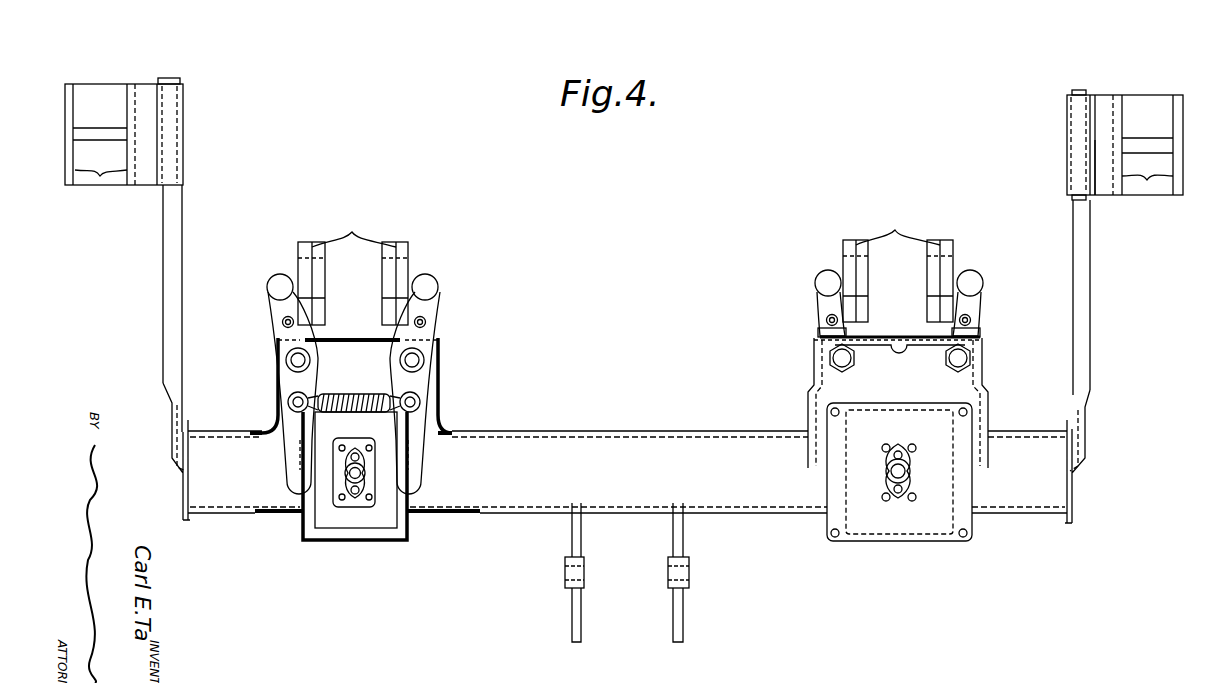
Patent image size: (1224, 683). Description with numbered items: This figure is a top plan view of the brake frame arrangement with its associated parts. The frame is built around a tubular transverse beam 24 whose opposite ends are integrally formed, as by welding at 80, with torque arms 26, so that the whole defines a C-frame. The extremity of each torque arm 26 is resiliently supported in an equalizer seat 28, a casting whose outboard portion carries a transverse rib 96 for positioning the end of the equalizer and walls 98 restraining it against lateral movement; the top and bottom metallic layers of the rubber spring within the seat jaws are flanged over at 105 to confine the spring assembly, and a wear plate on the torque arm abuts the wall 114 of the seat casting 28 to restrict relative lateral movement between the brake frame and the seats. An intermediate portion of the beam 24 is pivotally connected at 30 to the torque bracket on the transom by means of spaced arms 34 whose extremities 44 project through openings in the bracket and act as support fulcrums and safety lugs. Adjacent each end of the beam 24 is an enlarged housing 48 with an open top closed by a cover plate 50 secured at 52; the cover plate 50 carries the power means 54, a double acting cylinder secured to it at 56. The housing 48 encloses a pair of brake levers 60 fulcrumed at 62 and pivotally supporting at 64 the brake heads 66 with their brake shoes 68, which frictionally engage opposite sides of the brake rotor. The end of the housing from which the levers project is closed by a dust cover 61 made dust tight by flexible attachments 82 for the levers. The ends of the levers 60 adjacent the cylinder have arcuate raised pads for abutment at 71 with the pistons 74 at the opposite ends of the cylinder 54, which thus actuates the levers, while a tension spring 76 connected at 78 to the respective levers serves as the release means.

The transverse beam 24 is at (612, 442).
The torque arm 26 is at (163, 238).
The equalizer seat 28 is at (155, 90).
The pivotal connection 30 is at (565, 572).
The spaced arms 34 is at (572, 536).
The extremities of the spaced arms 44 is at (572, 625).
The housing 48 is at (812, 392).
The cover plate 50 is at (860, 478).
The cover plate fastenings 52 is at (838, 406).
The power means 54 is at (366, 528).
The cylinder fastenings 56 is at (898, 450).
The brake lever 60 is at (290, 425).
The dust cover 61 is at (355, 338).
The lever fulcrum 62 is at (292, 360).
The brake head pivot 64 is at (276, 282).
The brake head 66 is at (300, 250).
The brake shoe 68 is at (626, 228).
The abutment pads 71 is at (330, 478).
The piston 74 is at (333, 460).
The tension spring 76 is at (355, 395).
The spring connections 78 is at (288, 402).
The welds 80 is at (180, 420).
The flexible attachments 82 is at (282, 322).
The transverse rib 96 is at (100, 128).
The walls 98 is at (100, 176).
The flanged ends 105 is at (1075, 90).
The wall of seat casting 114 is at (1097, 190).